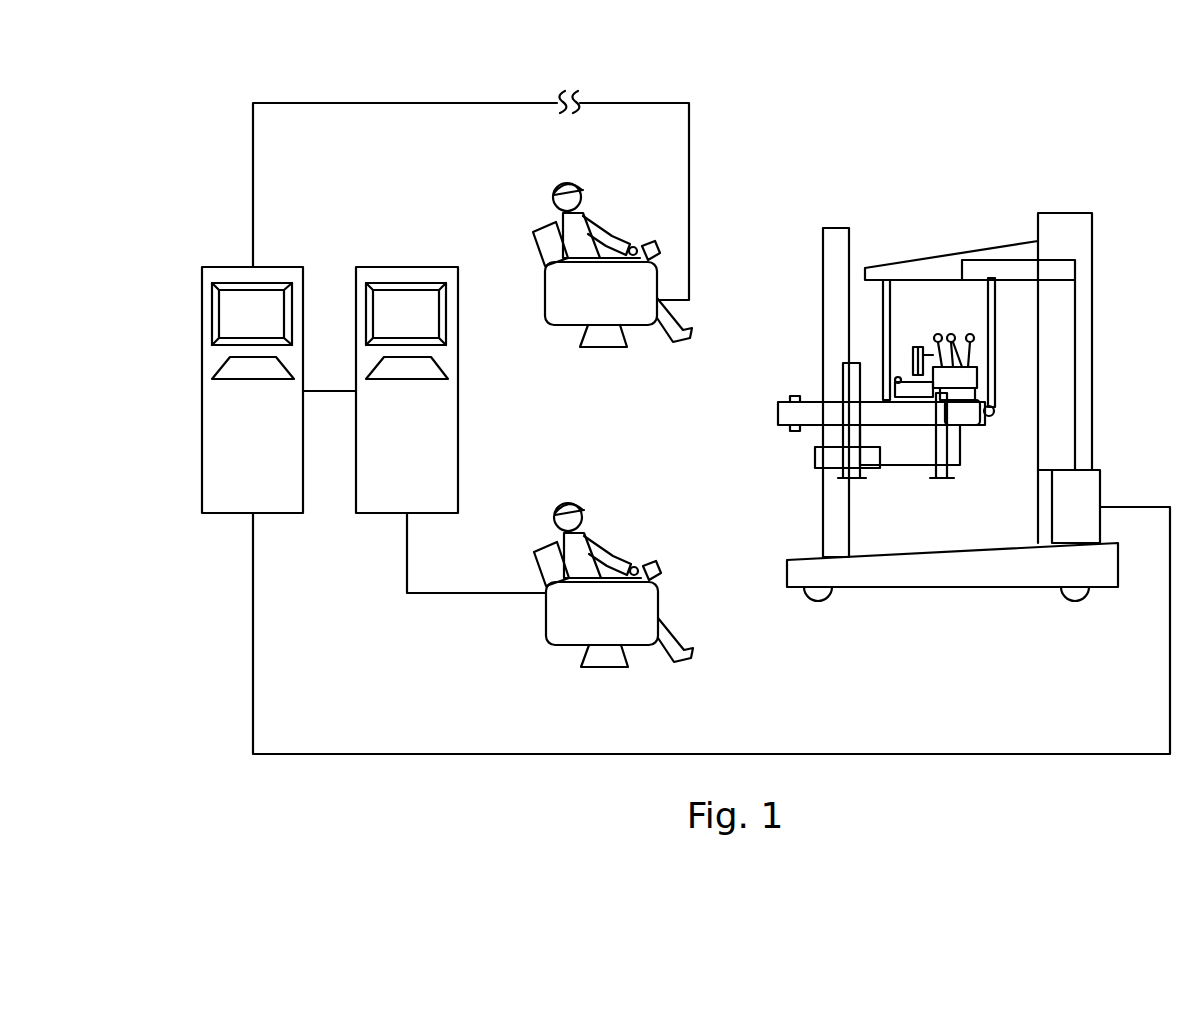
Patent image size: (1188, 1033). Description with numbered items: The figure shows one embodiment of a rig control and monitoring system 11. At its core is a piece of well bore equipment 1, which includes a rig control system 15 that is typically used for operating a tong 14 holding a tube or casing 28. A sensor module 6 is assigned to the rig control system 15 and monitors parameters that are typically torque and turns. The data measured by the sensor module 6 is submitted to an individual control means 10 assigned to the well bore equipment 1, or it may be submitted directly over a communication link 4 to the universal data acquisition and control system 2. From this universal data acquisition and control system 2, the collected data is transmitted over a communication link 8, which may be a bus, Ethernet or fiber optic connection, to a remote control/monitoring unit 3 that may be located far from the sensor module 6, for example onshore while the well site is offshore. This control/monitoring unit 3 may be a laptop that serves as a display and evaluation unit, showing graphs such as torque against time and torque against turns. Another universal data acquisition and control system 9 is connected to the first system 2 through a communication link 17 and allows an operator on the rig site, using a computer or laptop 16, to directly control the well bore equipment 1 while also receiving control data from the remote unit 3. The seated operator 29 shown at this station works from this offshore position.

The well bore equipment 1 is at (940, 222).
The universal data acquisition and control system 2 is at (200, 352).
The remote control/monitoring unit 3 is at (640, 250).
The communication link 4 is at (423, 757).
The sensor module 6 is at (965, 420).
The communication link 8 is at (419, 103).
The universal data acquisition and control system 9 is at (424, 267).
The individual control means 10 is at (1103, 480).
The rig control and monitoring system 11 is at (908, 80).
The tong 14 is at (778, 410).
The rig control system 15 is at (1095, 323).
The computer or laptop 16 is at (653, 570).
The communication link 17 is at (424, 596).
The tube or casing 28 is at (823, 318).
The second operator 29 is at (597, 551).